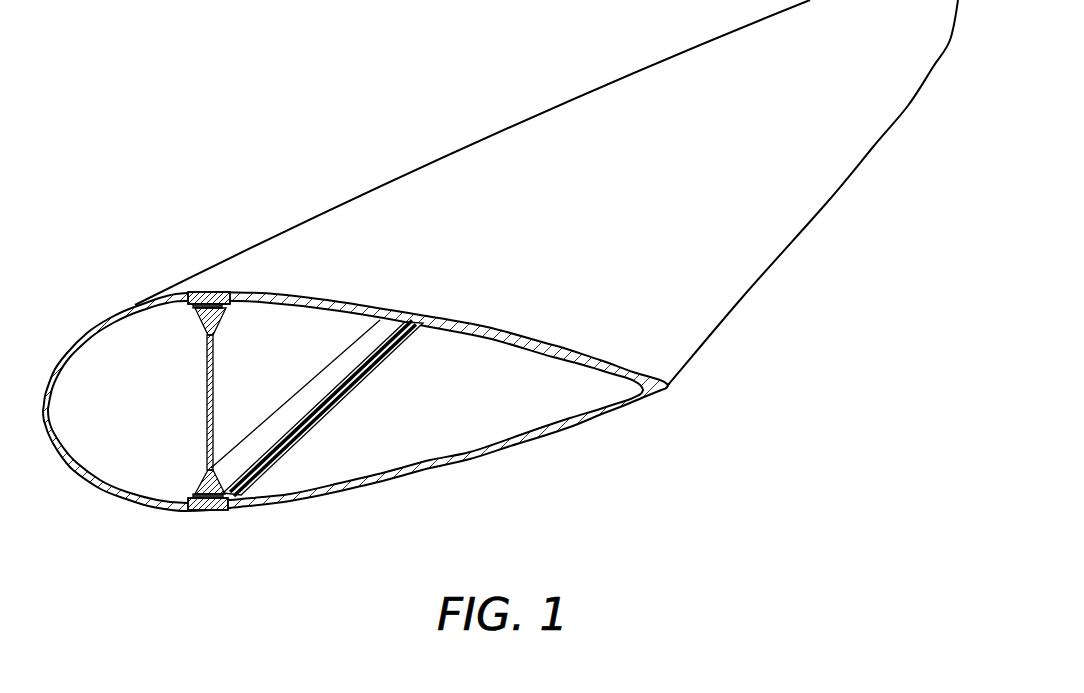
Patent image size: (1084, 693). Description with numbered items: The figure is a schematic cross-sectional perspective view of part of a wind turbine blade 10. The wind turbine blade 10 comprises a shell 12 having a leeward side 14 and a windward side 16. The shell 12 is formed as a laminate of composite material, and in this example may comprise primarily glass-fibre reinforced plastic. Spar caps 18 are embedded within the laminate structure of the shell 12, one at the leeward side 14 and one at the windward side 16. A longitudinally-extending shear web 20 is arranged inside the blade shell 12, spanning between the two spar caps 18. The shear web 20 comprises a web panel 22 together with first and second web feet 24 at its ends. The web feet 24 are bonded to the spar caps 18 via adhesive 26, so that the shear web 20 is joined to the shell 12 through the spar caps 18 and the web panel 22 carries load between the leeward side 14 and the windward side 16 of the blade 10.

The wind turbine blade 10 is at (500, 284).
The shell 12 is at (816, 208).
The leeward side 14 is at (311, 289).
The windward side 16 is at (408, 492).
The spar caps 18 is at (207, 294).
The shear web 20 is at (198, 398).
The web panel 22 is at (206, 418).
The web feet 24 is at (218, 313).
The adhesive 26 is at (196, 505).